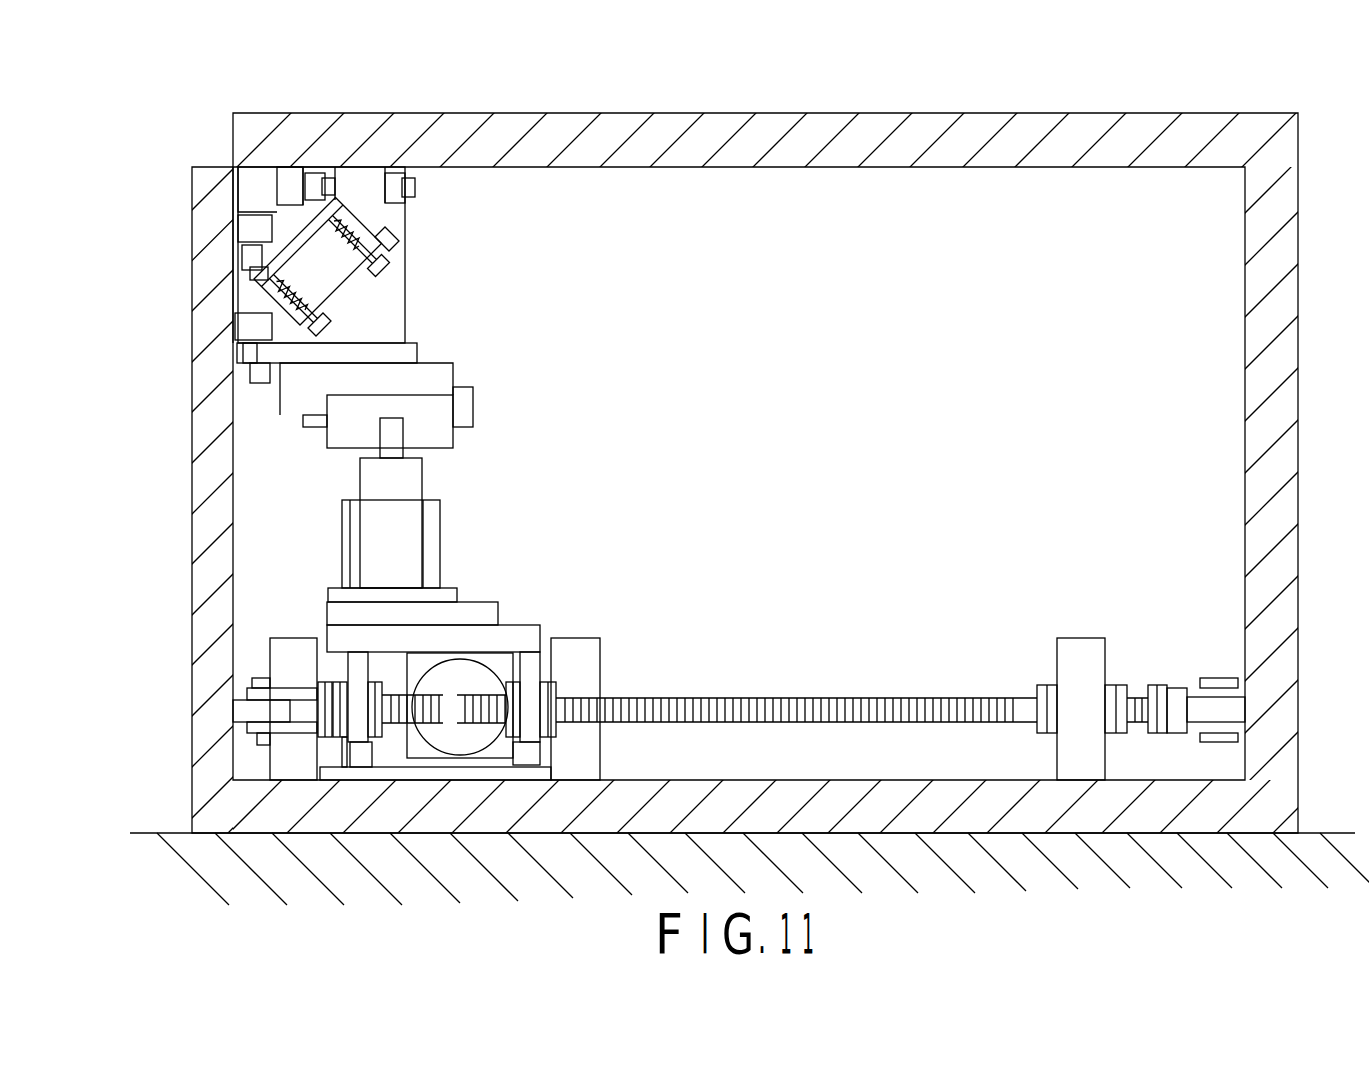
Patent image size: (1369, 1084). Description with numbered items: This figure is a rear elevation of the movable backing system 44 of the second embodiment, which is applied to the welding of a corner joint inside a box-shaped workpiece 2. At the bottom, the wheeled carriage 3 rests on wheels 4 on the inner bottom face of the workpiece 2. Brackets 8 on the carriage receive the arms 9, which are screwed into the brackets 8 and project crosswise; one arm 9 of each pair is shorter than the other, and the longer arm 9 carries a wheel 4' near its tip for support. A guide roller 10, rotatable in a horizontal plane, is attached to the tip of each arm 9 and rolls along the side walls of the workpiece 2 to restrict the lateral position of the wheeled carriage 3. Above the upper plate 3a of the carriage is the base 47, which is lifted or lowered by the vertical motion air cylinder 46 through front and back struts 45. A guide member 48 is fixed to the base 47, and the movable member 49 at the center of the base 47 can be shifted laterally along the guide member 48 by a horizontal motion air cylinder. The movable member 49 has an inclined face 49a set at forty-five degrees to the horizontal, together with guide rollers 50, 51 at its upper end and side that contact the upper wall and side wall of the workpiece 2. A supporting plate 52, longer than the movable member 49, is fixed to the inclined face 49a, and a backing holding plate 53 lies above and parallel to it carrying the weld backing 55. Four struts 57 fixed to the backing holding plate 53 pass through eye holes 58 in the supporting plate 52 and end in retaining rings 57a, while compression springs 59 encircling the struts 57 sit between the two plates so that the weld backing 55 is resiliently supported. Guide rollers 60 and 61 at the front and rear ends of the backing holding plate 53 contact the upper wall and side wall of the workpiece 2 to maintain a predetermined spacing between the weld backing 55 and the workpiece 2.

The workpiece 2 is at (860, 128).
The wheeled carriage 3 is at (541, 628).
The upper plate 3a is at (470, 636).
The wheels 4 is at (451, 685).
The wheel 4' is at (1084, 674).
The brackets 8 is at (356, 680).
The arm 9 is at (405, 700).
The guide roller 10 is at (246, 705).
The movable backing system 44 is at (679, 436).
The struts 45 is at (438, 518).
The vertical motion air cylinder 46 is at (416, 478).
The base 47 is at (447, 403).
The guide member 48 is at (468, 388).
The movable member 49 is at (406, 305).
The inclined face 49a is at (397, 238).
The guide roller 50 is at (377, 185).
The guide roller 51 is at (246, 326).
The supporting plate 52 is at (345, 286).
The backing holding plate 53 is at (248, 226).
The weld backing 55 is at (260, 178).
The struts 57 is at (352, 178).
The retaining ring 57a is at (390, 258).
The eye hole 58 is at (418, 212).
The compression springs 59 is at (397, 185).
The guide roller 60 is at (291, 180).
The guide roller 61 is at (240, 222).